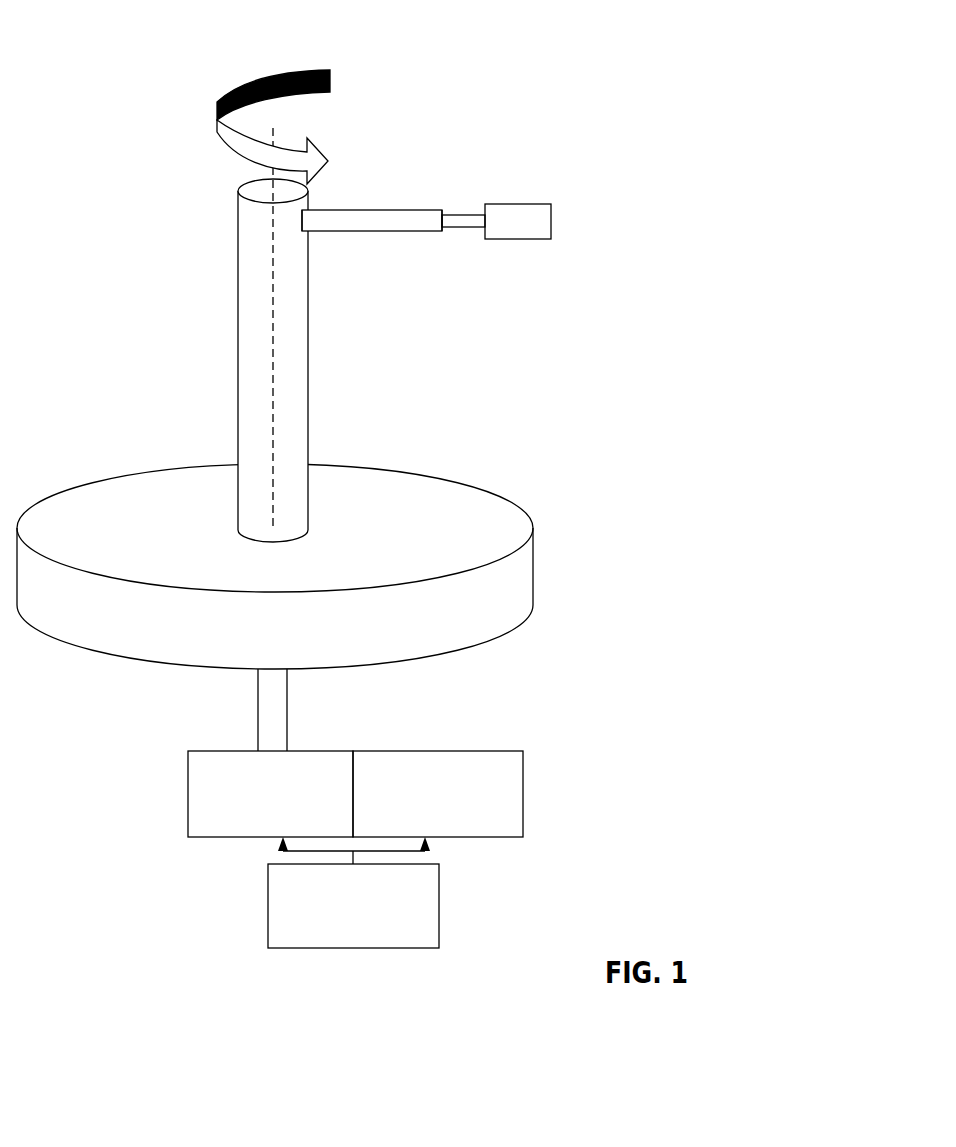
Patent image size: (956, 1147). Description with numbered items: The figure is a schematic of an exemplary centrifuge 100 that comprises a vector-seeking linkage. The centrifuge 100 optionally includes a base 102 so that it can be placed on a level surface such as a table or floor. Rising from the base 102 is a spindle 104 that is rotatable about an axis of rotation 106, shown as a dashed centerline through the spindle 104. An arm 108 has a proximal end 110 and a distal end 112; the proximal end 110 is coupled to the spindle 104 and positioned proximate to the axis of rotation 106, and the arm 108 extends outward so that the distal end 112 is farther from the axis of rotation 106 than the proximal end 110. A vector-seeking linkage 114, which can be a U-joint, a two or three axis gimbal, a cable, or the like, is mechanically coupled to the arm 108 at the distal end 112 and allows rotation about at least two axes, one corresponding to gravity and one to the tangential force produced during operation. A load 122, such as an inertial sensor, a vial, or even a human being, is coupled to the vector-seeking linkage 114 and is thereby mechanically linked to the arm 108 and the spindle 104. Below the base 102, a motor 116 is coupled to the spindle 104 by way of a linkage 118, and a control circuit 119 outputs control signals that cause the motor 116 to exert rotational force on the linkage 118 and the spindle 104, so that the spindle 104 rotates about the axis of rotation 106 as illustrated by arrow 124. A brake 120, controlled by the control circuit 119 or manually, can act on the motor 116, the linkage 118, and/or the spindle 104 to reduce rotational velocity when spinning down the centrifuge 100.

The centrifuge 100 is at (122, 55).
The base 102 is at (450, 478).
The spindle 104 is at (308, 326).
The axis of rotation 106 is at (272, 275).
The arm 108 is at (373, 210).
The proximal end 110 is at (305, 218).
The distal end 112 is at (449, 201).
The vector-seeking linkage 114 is at (463, 228).
The motor 116 is at (270, 794).
The linkage 118 is at (287, 709).
The control circuit 119 is at (353, 892).
The brake 120 is at (438, 794).
The load 122 is at (518, 204).
The arrow 124 is at (250, 80).